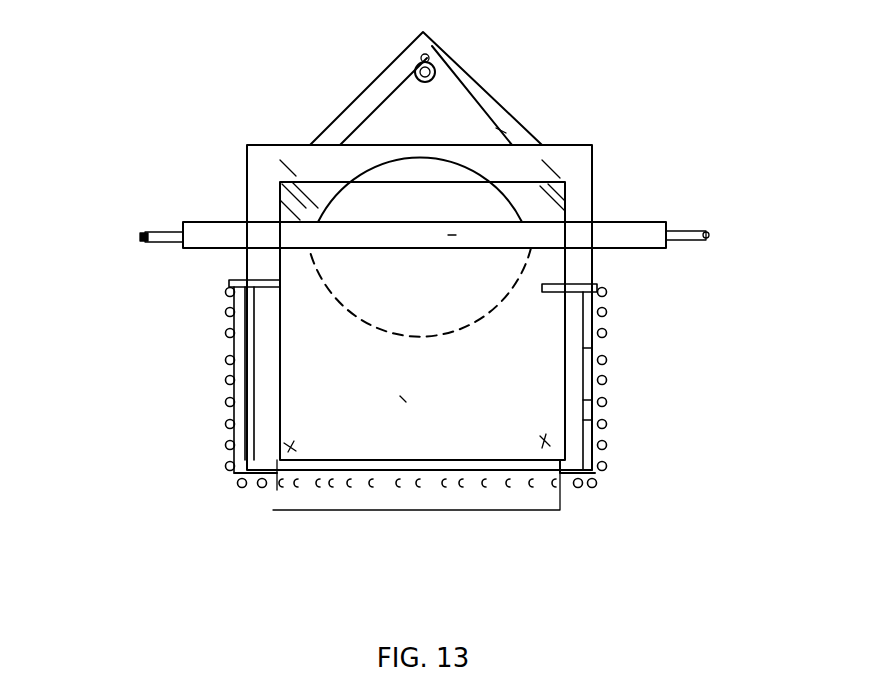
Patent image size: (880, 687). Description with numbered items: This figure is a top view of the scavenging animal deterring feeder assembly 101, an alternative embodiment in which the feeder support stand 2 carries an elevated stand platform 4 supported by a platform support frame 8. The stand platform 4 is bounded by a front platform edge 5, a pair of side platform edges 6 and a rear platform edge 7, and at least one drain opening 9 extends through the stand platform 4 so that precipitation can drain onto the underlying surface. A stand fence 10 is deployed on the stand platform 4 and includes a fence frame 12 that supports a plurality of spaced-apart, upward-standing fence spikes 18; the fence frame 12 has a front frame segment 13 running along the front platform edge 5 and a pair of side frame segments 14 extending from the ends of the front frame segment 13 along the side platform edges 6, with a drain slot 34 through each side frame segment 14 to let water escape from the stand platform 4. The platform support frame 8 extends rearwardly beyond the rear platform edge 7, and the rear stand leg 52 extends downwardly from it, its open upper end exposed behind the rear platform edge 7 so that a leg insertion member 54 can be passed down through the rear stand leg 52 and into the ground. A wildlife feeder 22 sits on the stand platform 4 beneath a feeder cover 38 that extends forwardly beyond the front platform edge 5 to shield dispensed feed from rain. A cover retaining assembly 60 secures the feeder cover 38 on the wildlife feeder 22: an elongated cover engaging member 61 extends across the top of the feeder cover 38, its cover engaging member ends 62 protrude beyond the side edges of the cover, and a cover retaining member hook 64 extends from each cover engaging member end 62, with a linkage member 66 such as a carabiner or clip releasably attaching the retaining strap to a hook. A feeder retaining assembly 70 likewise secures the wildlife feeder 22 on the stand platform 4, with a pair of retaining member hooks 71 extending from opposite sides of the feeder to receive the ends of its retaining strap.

The scavenging animal deterring feeder assembly 101 is at (660, 110).
The feeder support stand 2 is at (340, 100).
The stand platform 4 is at (337, 130).
The front platform edge 5 is at (362, 498).
The side platform edge 6 is at (592, 165).
The rear platform edge 7 is at (500, 127).
The platform support frame 8 is at (368, 97).
The drain opening 9 is at (417, 414).
The stand fence 10 is at (218, 463).
The fence frame 12 is at (271, 495).
The front frame segment 13 is at (518, 474).
The side frame segment 14 is at (223, 368).
The fence spike 18 is at (222, 428).
The wildlife feeder 22 is at (410, 407).
The drain slot 34 is at (225, 332).
The feeder cover 38 is at (303, 512).
The rear stand leg 52 is at (443, 83).
The leg insertion member 54 is at (431, 62).
The cover retaining assembly 60 is at (178, 198).
The cover engaging member 61 is at (452, 248).
The cover engaging member end 62 is at (180, 230).
The cover retaining member hook 64 is at (140, 233).
The linkage member 66 is at (130, 240).
The feeder retaining assembly 70 is at (640, 293).
The retaining member hook 71 is at (317, 337).